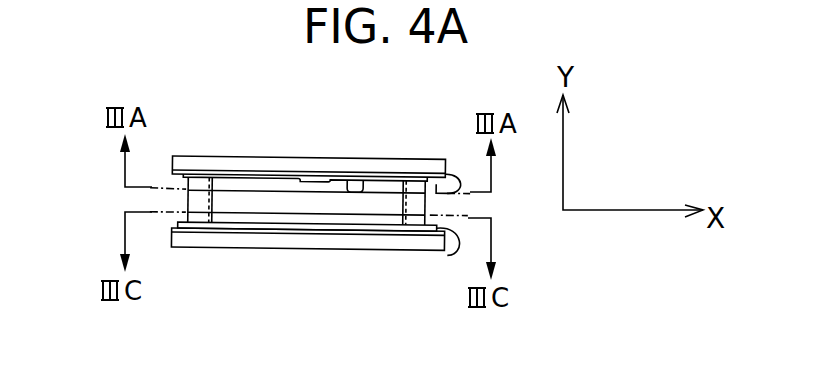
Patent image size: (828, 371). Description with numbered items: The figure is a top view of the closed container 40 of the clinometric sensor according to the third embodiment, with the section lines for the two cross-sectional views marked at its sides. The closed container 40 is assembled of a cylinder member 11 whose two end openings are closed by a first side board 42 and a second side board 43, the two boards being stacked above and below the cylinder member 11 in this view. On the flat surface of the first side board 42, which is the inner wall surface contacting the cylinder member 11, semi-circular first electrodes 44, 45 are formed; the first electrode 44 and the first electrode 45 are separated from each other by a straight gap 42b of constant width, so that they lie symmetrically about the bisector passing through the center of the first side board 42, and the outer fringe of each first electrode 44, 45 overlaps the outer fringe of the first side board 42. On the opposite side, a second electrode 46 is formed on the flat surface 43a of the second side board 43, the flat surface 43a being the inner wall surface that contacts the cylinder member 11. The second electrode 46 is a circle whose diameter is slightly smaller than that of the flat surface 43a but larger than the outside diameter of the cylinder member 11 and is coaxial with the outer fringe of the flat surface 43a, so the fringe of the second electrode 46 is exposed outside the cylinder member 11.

The cylinder member 11 is at (183, 203).
The closed container 40 is at (204, 146).
The first side board 42 is at (376, 168).
The straight gap 42b is at (349, 188).
The second side board 43 is at (297, 240).
The flat surface 43a is at (450, 253).
The first electrode 44 is at (259, 176).
The first electrode 45 is at (452, 186).
The second electrode 46 is at (222, 229).